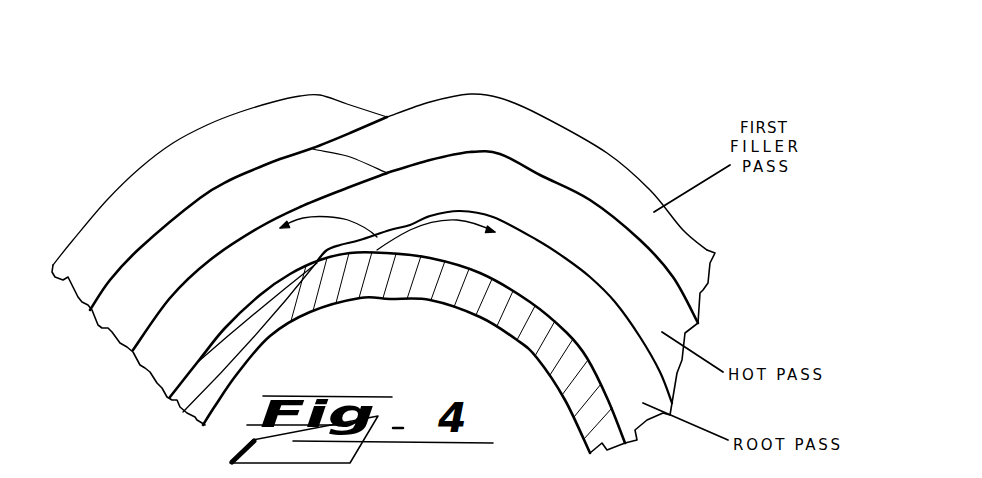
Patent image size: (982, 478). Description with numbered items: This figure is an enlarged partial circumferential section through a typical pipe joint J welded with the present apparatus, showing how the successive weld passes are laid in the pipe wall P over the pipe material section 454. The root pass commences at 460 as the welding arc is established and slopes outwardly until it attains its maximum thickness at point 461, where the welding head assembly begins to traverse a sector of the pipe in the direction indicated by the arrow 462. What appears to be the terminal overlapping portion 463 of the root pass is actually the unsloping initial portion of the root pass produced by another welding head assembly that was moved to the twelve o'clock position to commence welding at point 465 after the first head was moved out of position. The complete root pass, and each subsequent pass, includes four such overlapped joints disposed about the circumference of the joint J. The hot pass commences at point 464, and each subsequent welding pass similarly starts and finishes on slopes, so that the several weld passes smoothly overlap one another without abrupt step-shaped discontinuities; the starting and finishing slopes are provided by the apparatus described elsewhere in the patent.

The pipe wall 454 is at (427, 300).
The root pass commencement point 460 is at (294, 275).
The maximum thickness point 461 is at (467, 212).
The arrow 462 is at (470, 226).
The apparent terminal overlapping portion 463 is at (328, 247).
The hot pass commencement point 464 is at (357, 183).
The root pass start point 465 is at (377, 250).
The joint J is at (536, 100).
The pipe P is at (510, 341).